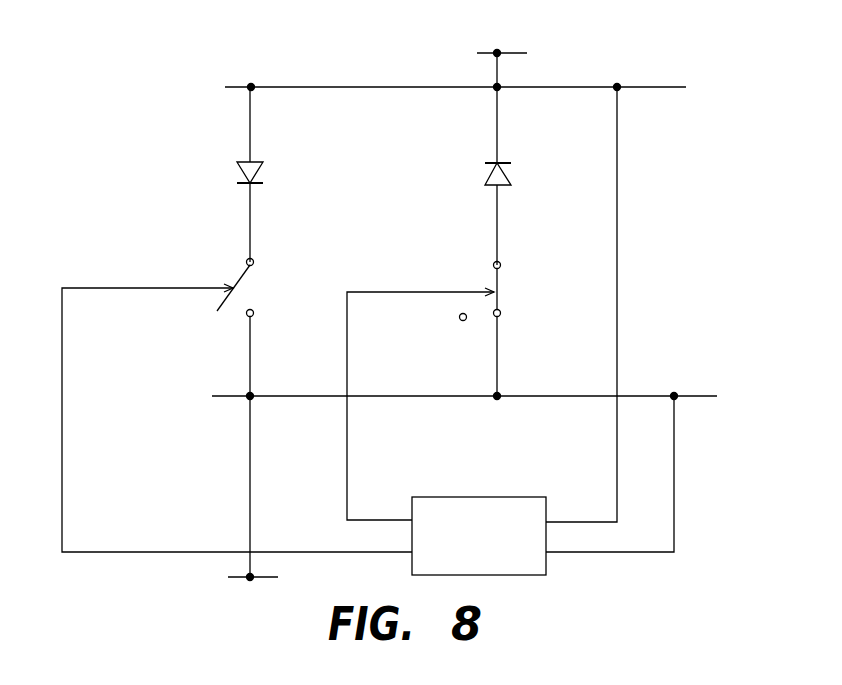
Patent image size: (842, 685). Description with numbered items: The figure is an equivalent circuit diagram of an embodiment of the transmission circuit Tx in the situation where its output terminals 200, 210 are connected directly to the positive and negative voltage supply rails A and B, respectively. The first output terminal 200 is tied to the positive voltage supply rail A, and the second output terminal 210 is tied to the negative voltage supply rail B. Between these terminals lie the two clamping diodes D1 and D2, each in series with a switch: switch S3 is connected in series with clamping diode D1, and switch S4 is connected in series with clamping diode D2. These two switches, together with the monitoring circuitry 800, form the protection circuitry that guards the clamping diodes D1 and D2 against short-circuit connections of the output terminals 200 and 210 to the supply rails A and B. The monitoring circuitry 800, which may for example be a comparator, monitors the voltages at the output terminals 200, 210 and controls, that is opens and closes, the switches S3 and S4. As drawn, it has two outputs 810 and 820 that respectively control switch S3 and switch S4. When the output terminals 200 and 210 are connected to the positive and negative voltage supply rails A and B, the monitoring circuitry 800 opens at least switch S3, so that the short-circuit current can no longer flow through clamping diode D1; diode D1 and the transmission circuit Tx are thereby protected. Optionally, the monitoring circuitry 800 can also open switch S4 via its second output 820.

The output terminal 200 is at (617, 87).
The output terminal 210 is at (674, 396).
The monitoring circuitry 800 is at (546, 573).
The output of monitoring circuitry 810 is at (182, 553).
The output of monitoring circuitry 820 is at (352, 517).
The positive voltage supply rail A is at (497, 53).
The negative voltage supply rail B is at (246, 580).
The transmission circuit Tx is at (323, 62).
The clamping diode D1 is at (236, 176).
The clamping diode D2 is at (485, 176).
The switch S3 is at (246, 282).
The switch S4 is at (494, 282).